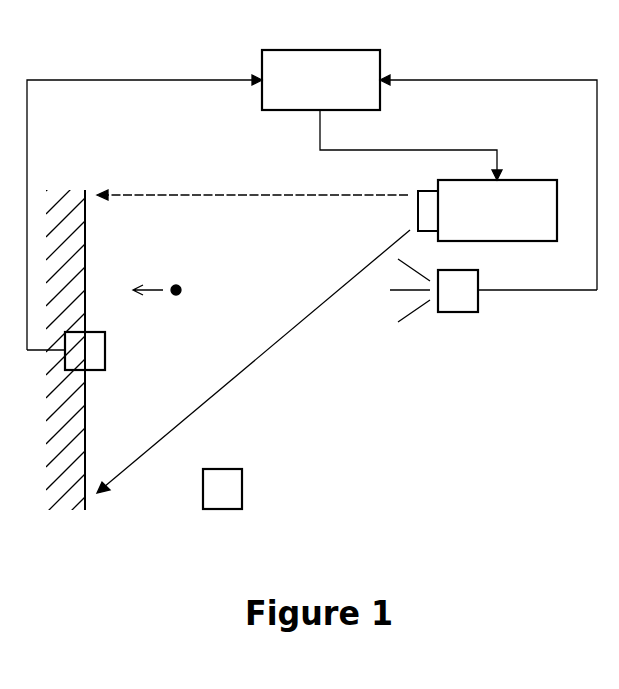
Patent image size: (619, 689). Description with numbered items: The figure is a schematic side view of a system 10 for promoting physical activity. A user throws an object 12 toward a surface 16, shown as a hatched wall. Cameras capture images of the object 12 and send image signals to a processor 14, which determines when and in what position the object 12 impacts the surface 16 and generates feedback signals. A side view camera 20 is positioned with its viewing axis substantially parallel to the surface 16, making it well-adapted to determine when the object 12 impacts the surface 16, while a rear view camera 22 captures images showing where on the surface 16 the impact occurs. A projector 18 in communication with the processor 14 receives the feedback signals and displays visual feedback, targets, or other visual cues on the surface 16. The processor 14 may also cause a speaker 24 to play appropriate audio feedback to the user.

The system for promoting physical activity 10 is at (362, 410).
The object 12 is at (179, 287).
The processor 14 is at (344, 55).
The surface 16 is at (85, 243).
The projector 18 is at (532, 187).
The side view camera 20 is at (100, 360).
The rear view camera 22 is at (467, 303).
The speaker 24 is at (237, 478).